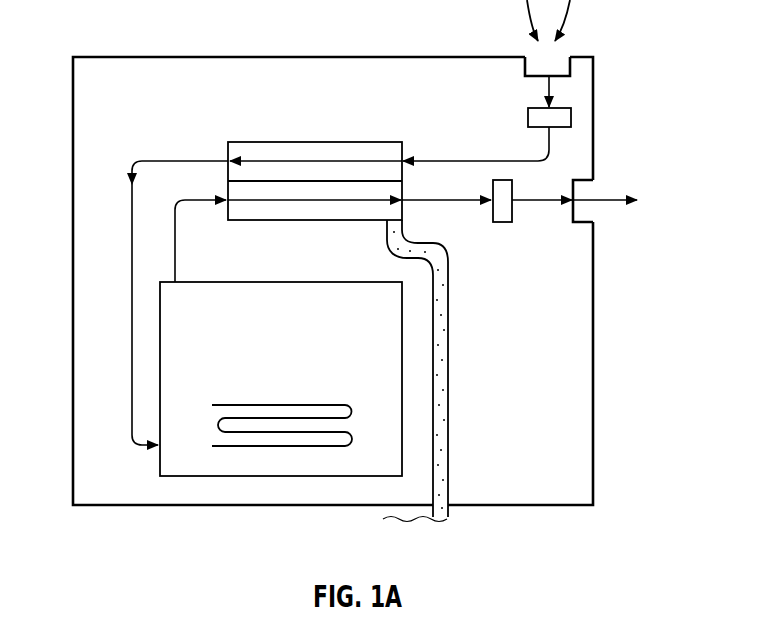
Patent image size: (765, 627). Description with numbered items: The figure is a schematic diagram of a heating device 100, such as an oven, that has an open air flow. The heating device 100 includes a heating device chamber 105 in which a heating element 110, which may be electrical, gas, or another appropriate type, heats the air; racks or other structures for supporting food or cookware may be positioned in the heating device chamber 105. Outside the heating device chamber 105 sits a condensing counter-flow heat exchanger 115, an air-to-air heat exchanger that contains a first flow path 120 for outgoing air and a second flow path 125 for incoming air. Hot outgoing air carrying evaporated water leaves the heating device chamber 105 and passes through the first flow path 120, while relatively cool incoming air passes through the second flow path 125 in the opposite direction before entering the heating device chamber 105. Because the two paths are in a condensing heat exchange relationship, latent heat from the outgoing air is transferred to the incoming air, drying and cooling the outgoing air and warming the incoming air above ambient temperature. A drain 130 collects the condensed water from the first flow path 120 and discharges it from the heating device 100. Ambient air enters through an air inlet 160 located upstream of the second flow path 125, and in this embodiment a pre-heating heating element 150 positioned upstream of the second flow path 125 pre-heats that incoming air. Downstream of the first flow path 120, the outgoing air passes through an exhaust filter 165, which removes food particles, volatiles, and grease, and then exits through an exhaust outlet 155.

The heating device 100 is at (145, 41).
The heating device chamber 105 is at (186, 449).
The heating element 110 is at (278, 404).
The condensing counter-flow heat exchanger 115 is at (226, 150).
The first flow path 120 is at (308, 222).
The second flow path 125 is at (318, 142).
The drain 130 is at (449, 398).
The pre-heating heating element 150 is at (528, 118).
The exhaust outlet 155 is at (588, 187).
The air inlet 160 is at (528, 68).
The exhaust filter 165 is at (502, 222).